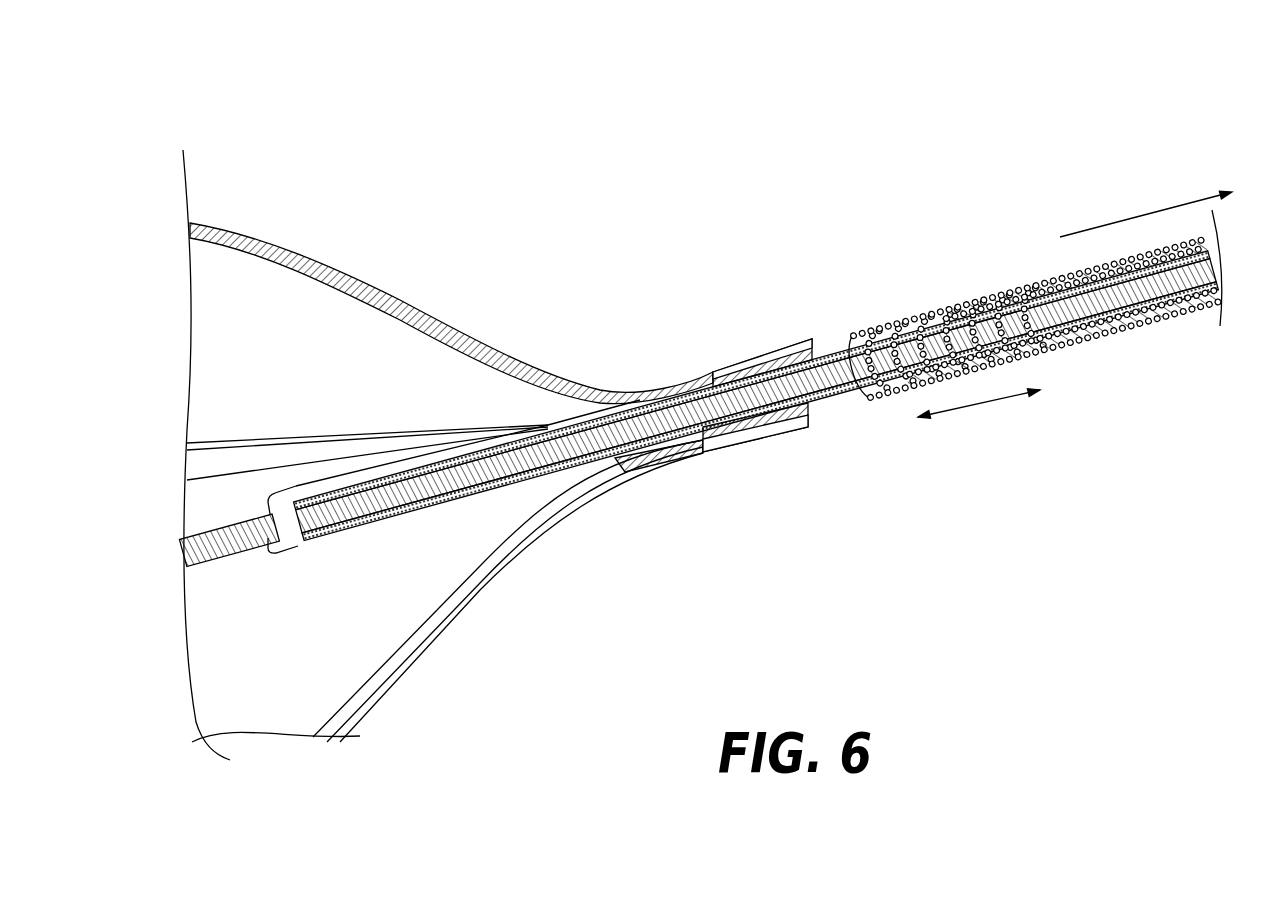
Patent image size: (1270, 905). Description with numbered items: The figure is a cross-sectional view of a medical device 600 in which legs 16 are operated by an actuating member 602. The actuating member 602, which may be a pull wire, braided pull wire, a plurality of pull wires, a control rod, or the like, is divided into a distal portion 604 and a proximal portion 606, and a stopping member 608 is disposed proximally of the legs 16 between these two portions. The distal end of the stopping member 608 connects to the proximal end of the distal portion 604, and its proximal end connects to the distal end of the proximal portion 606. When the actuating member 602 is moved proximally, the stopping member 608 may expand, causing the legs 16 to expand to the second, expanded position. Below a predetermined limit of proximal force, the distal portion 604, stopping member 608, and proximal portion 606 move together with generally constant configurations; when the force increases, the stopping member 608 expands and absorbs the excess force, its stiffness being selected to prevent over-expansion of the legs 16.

The medical device 600 is at (244, 102).
The legs 16 is at (247, 233).
The actuating member 602 is at (1100, 378).
The distal portion 604 is at (608, 444).
The proximal portion 606 is at (1148, 320).
The stopping member 608 is at (987, 297).